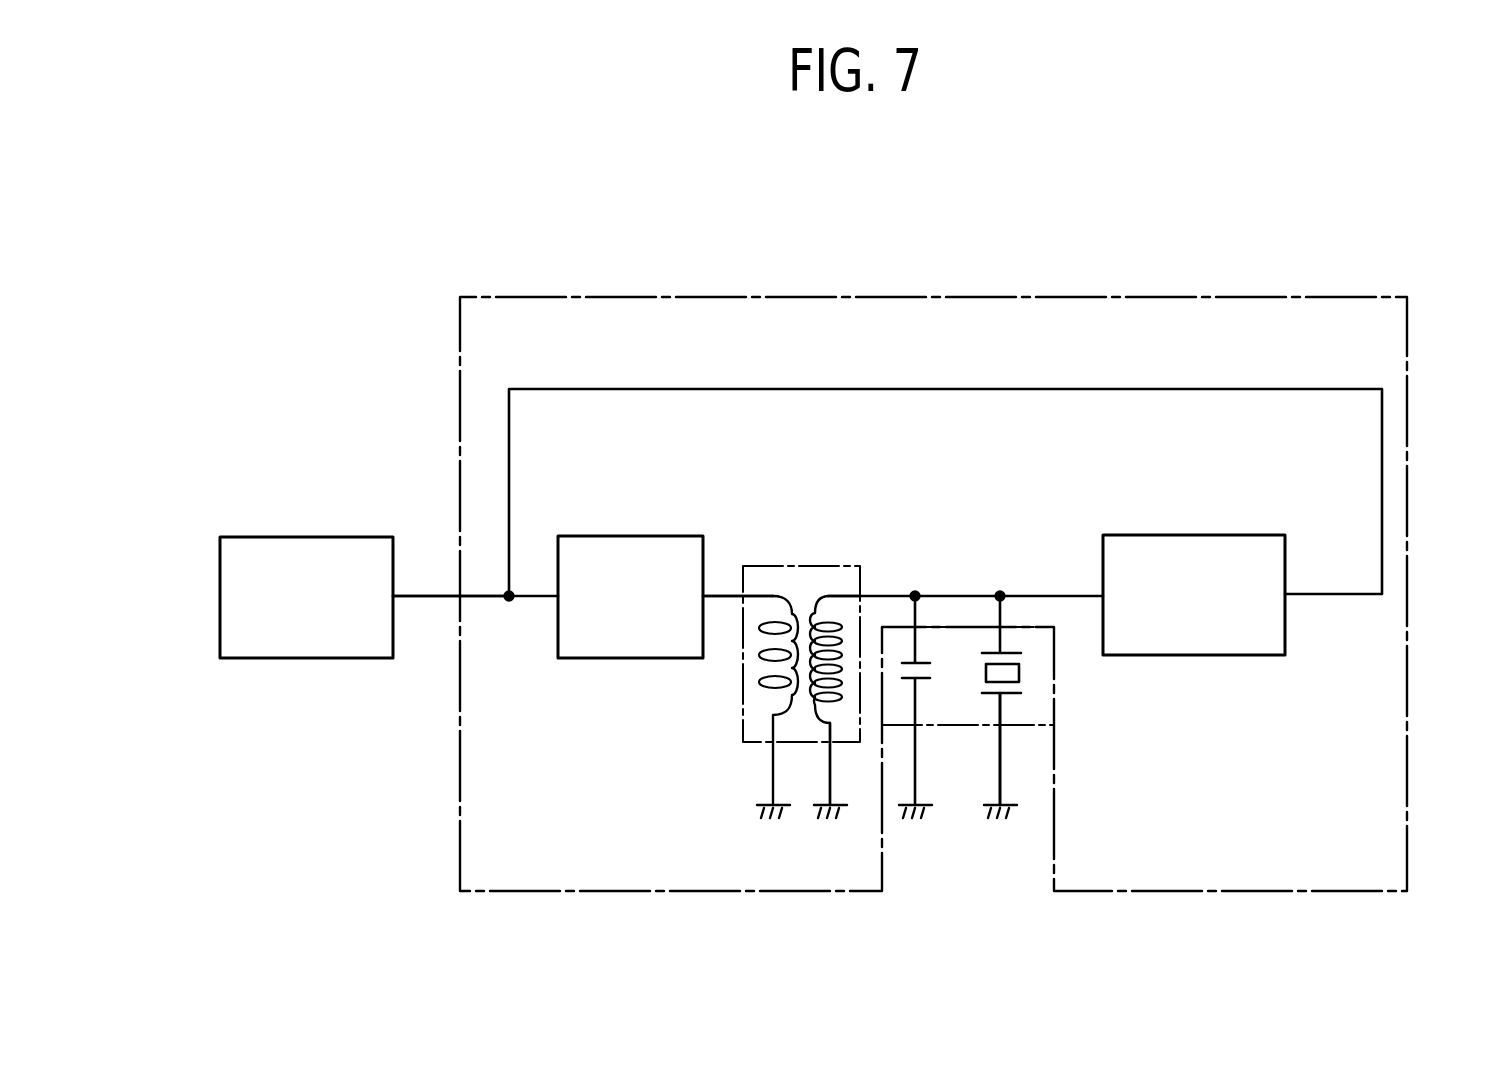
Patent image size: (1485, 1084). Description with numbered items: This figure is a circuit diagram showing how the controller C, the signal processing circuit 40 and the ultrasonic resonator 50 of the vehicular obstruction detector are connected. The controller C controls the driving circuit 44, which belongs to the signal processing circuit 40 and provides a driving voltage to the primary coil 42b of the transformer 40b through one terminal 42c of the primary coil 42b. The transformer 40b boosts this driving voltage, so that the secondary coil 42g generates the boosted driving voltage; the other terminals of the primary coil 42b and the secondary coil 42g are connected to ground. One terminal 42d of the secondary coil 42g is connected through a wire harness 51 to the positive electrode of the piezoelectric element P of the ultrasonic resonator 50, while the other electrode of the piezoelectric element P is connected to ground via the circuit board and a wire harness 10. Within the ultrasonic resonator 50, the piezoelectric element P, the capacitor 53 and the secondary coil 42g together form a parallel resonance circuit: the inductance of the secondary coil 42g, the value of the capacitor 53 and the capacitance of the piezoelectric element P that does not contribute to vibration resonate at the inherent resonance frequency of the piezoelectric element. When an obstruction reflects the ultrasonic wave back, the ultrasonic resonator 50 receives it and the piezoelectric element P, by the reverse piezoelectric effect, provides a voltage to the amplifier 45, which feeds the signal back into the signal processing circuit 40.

The signal processing circuit 40 is at (935, 290).
The controller C is at (298, 658).
The wire harness 10 is at (426, 600).
The driving circuit 44 is at (597, 536).
The terminal of the primary coil 42c is at (727, 596).
The transformer 40b is at (773, 587).
The primary coil 42b is at (763, 655).
The terminal of the secondary coil 42d is at (832, 593).
The secondary coil 42g is at (842, 690).
The ultrasonic resonator 50 is at (977, 623).
The capacitor 53 is at (923, 655).
The wire harness 51 is at (1003, 618).
The piezoelectric element P is at (1015, 710).
The amplifier 45 is at (1180, 535).